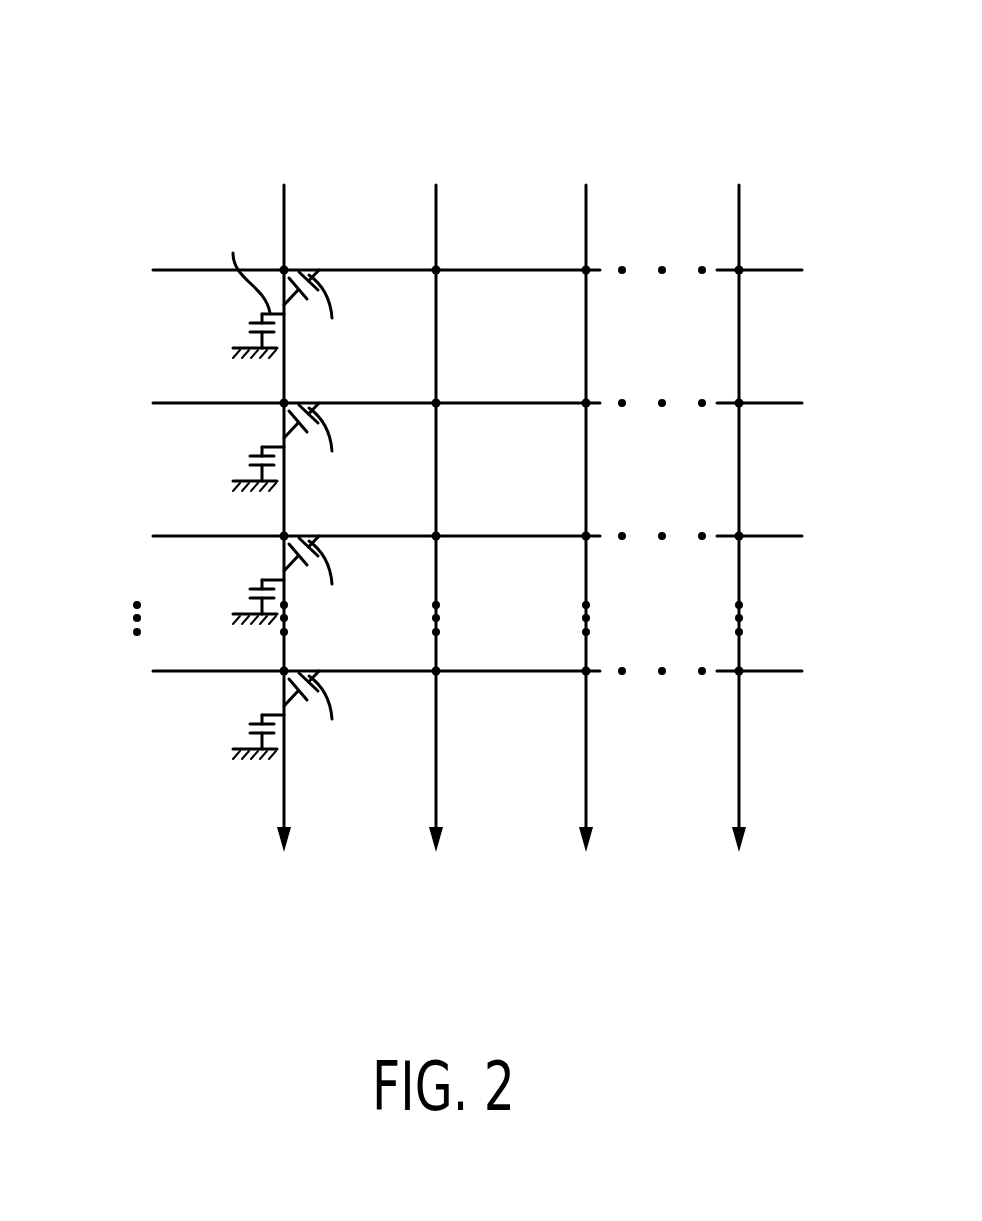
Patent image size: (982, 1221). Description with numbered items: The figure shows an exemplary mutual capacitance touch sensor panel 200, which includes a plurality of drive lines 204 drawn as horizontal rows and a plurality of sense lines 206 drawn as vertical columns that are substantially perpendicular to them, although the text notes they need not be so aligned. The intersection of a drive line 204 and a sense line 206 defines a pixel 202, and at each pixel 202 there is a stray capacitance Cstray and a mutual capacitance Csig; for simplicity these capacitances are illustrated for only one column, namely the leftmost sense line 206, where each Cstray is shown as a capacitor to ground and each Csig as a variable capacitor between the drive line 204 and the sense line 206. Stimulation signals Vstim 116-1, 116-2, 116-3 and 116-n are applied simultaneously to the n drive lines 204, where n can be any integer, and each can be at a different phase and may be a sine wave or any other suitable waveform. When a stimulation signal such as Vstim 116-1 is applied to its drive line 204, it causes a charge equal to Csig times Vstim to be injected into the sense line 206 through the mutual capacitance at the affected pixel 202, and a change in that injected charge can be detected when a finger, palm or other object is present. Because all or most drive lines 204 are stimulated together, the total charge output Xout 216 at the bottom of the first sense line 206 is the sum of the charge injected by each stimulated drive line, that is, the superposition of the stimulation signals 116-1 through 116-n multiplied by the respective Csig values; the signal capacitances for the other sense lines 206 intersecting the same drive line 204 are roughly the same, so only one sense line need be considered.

The panel 200 is at (447, 80).
The stimulation signal Vstim 116-1 is at (450, 291).
The stimulation signal Vstim 116-2 is at (433, 406).
The stimulation signal Vstim 116-3 is at (433, 539).
The stimulation signal Vstim 116-n is at (433, 674).
The pixel 202 is at (741, 269).
The drive line 204 is at (775, 272).
The sense line 206 is at (741, 511).
The total charge output Xout 216 is at (308, 565).